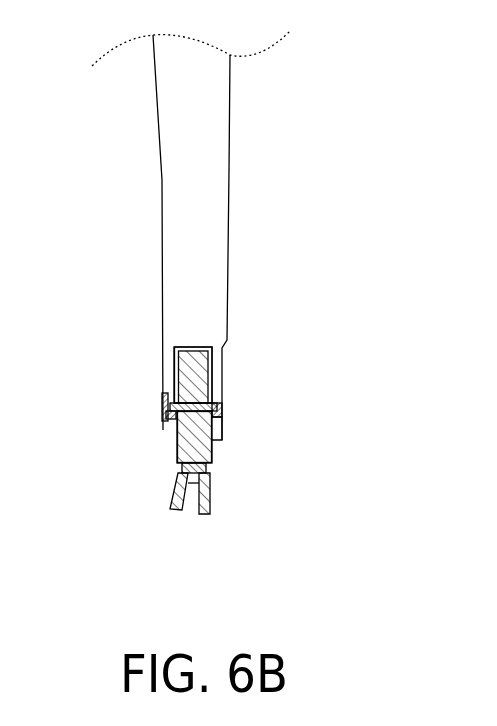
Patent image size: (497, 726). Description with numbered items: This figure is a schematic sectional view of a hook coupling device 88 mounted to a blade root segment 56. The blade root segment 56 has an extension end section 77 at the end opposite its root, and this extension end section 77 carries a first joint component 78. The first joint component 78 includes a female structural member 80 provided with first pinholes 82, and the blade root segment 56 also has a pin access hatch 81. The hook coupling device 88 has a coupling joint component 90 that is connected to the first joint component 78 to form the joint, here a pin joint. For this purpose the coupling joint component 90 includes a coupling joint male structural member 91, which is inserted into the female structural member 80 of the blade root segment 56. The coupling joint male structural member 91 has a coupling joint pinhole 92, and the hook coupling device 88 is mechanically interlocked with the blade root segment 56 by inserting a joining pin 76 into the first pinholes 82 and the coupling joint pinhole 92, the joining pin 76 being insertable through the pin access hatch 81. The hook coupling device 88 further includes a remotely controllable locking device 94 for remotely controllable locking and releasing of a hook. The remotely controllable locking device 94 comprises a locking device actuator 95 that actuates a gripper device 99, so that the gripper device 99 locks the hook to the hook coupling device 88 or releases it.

The blade root segment 56 is at (162, 150).
The extension end section 77 is at (124, 297).
The first joint component 78 is at (168, 346).
The female structural member 80 is at (213, 347).
The first pinholes 82 is at (163, 406).
The pin access hatch 81 is at (162, 395).
The coupling joint component 90 is at (166, 424).
The joining pin 76 is at (216, 408).
The coupling joint pinhole 92 is at (222, 418).
The coupling joint male structural member 91 is at (212, 440).
The hook coupling device 88 is at (259, 466).
The remotely controllable locking device 94 is at (160, 488).
The gripper device 99 is at (170, 509).
The locking device actuator 95 is at (210, 478).